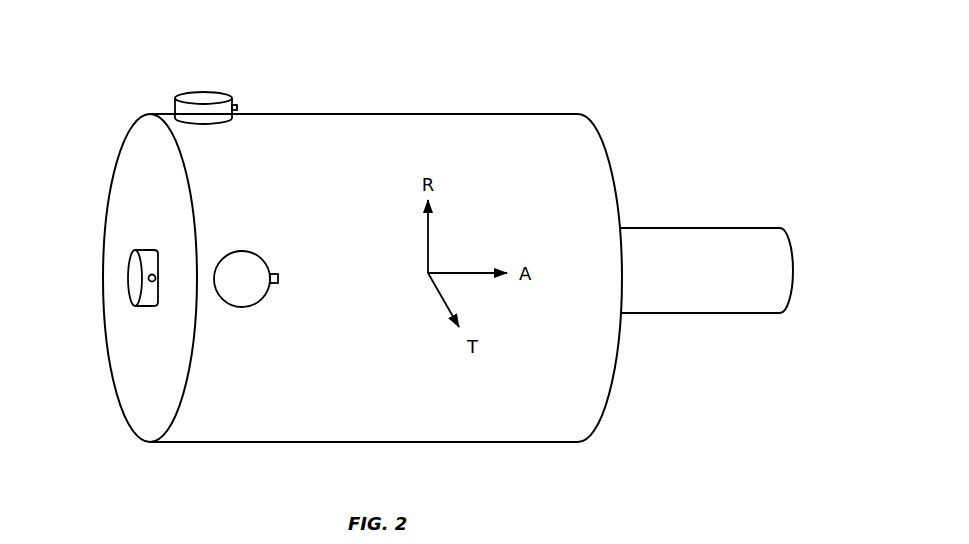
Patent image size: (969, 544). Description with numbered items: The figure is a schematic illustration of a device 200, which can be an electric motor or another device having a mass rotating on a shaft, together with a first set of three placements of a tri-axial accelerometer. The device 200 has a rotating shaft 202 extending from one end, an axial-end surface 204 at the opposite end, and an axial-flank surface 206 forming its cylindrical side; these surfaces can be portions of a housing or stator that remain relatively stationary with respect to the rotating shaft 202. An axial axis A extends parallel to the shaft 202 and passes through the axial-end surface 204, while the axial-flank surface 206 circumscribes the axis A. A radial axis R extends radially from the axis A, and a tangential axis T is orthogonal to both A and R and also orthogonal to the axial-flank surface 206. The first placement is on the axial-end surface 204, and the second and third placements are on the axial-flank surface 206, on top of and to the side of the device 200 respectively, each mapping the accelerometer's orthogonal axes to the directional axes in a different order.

The device 200 is at (417, 244).
The rotating shaft 202 is at (712, 242).
The axial-end surface 204 is at (143, 138).
The axial-flank surface 206 is at (402, 133).